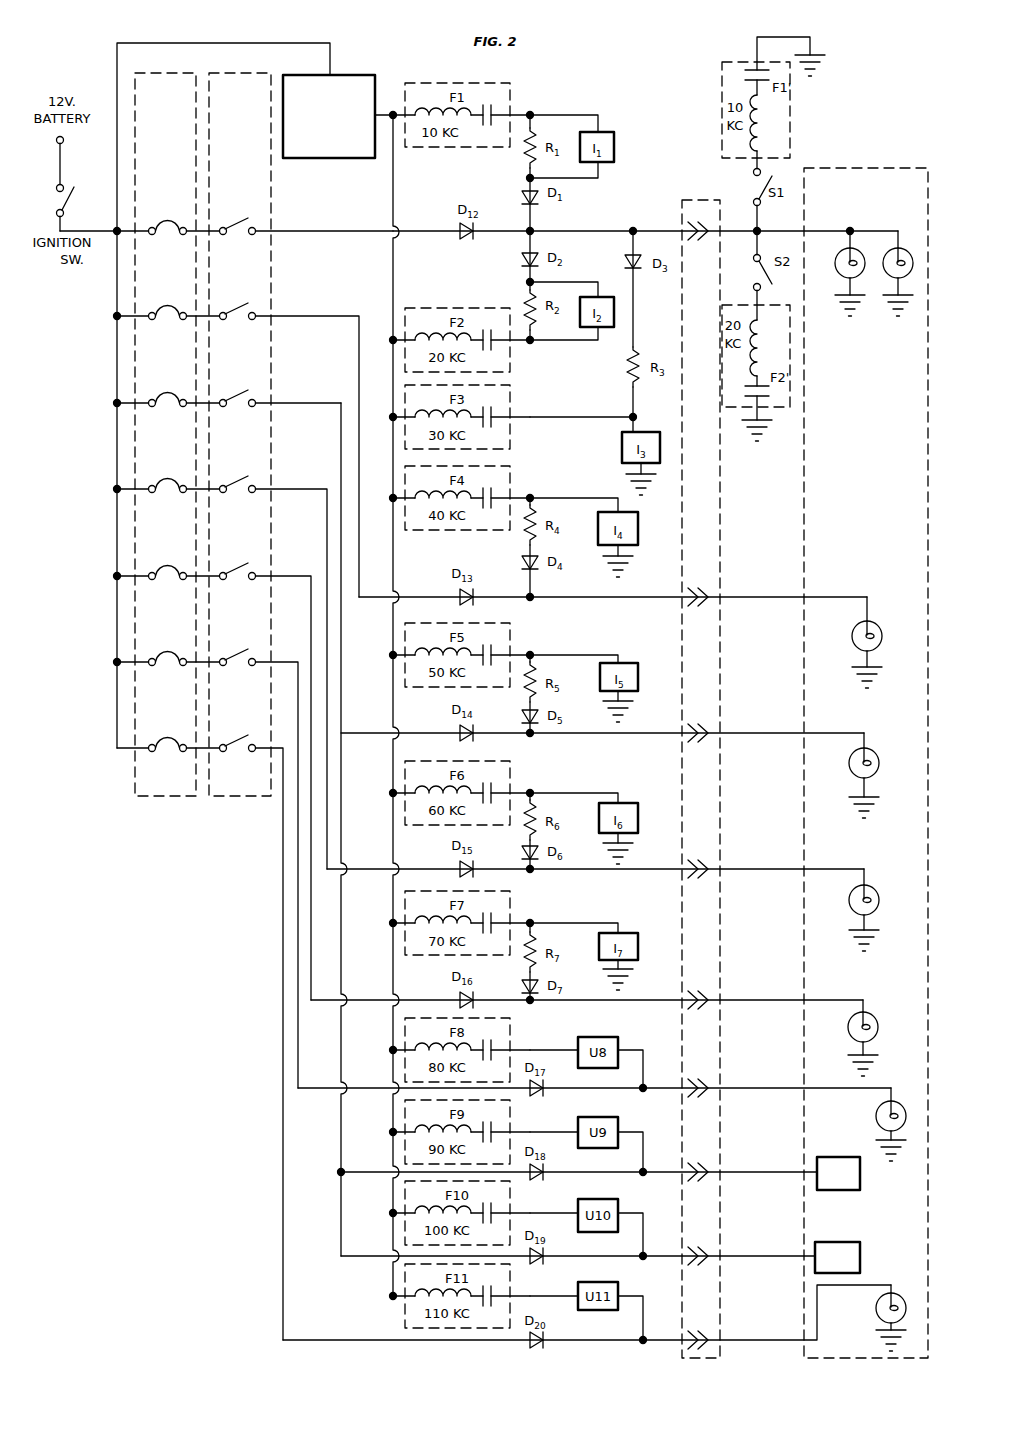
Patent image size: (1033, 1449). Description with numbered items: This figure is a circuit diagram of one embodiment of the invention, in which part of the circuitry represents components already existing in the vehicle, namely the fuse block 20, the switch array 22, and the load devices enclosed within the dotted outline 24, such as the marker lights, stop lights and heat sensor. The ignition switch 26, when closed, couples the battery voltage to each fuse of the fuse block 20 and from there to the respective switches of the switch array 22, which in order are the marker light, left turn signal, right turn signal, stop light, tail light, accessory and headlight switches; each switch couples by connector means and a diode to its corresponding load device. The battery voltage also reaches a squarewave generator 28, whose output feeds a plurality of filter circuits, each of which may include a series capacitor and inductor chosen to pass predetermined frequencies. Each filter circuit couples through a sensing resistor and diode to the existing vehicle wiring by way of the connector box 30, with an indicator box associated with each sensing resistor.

The fuse block 20 is at (156, 434).
The switch array 22 is at (229, 434).
The dotted outline 24 is at (928, 222).
The ignition switch 26 is at (70, 202).
The squarewave generator 28 is at (329, 116).
The connector box 30 is at (702, 763).